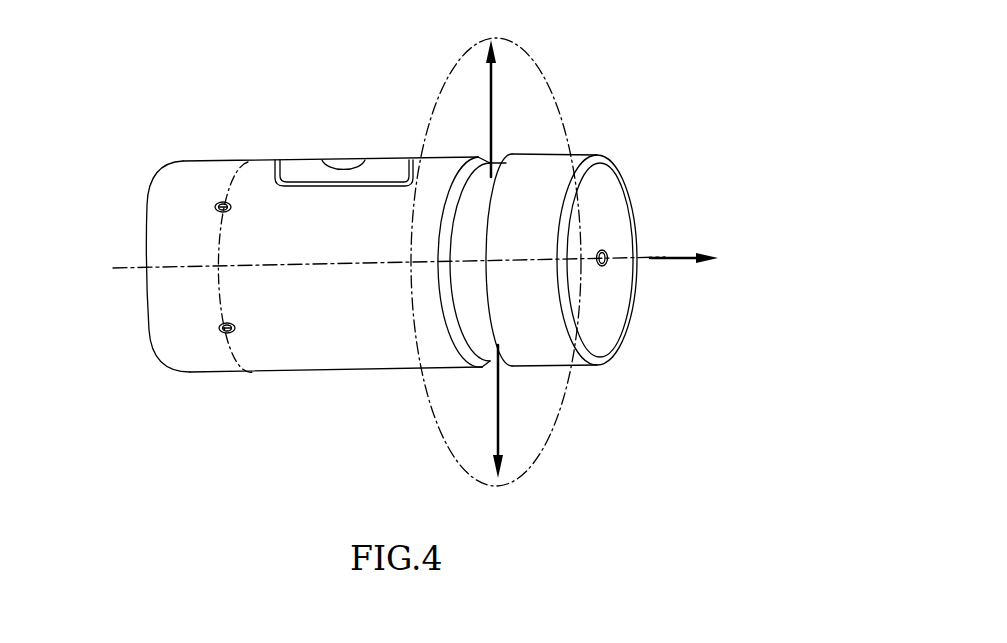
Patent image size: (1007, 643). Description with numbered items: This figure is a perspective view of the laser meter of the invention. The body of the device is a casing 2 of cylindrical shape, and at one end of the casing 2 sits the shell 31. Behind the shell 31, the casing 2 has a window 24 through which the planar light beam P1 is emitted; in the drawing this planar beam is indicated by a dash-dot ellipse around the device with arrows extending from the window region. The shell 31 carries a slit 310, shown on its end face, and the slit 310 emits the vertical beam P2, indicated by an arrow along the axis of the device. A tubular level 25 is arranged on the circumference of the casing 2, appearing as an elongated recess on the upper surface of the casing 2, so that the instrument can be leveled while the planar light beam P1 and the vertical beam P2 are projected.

The casing 2 is at (177, 200).
The window 24 is at (480, 382).
The tubular level 25 is at (340, 158).
The shell 31 is at (610, 188).
The slit 310 is at (607, 263).
The planar light beam P1 is at (528, 55).
The vertical beam P2 is at (662, 255).